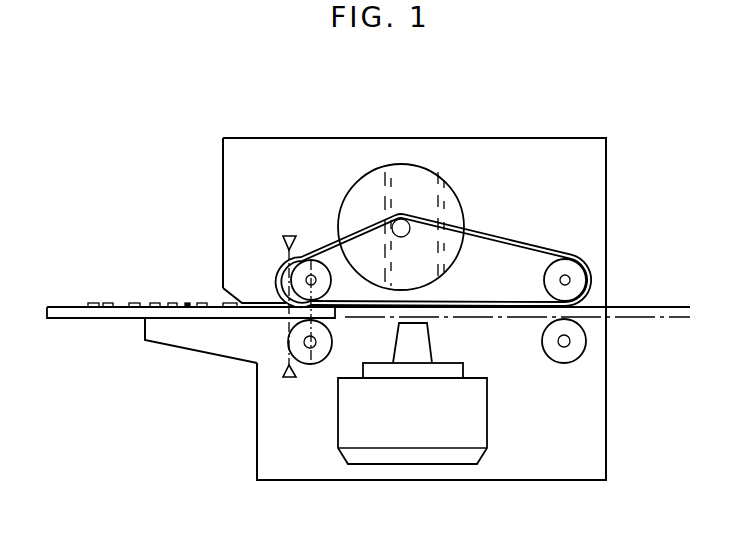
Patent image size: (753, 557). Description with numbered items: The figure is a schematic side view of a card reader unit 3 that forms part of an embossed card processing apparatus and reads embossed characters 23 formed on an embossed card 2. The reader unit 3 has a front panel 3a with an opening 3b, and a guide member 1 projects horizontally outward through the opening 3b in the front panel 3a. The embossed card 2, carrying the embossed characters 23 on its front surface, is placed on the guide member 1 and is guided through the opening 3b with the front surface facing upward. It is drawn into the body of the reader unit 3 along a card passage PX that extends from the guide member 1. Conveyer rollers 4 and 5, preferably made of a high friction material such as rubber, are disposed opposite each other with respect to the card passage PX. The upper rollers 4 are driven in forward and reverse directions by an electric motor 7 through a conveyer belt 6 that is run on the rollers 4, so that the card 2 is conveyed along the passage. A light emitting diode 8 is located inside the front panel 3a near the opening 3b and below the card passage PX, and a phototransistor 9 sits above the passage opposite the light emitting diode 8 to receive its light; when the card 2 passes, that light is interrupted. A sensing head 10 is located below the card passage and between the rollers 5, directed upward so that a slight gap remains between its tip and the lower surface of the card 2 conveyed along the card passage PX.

The guide member 1 is at (180, 353).
The embossed card 2 is at (67, 306).
The embossed characters 23 is at (90, 302).
The card reader unit 3 is at (606, 178).
The front panel 3a is at (223, 182).
The opening 3b is at (228, 298).
The conveyer rollers 4 is at (295, 274).
The conveyer rollers 5 is at (311, 364).
The conveyer belt 6 is at (326, 246).
The electric motor 7 is at (407, 163).
The light emitting diode 8 is at (283, 372).
The phototransistor 9 is at (288, 236).
The sensing head 10 is at (393, 465).
The card passage PX is at (461, 302).